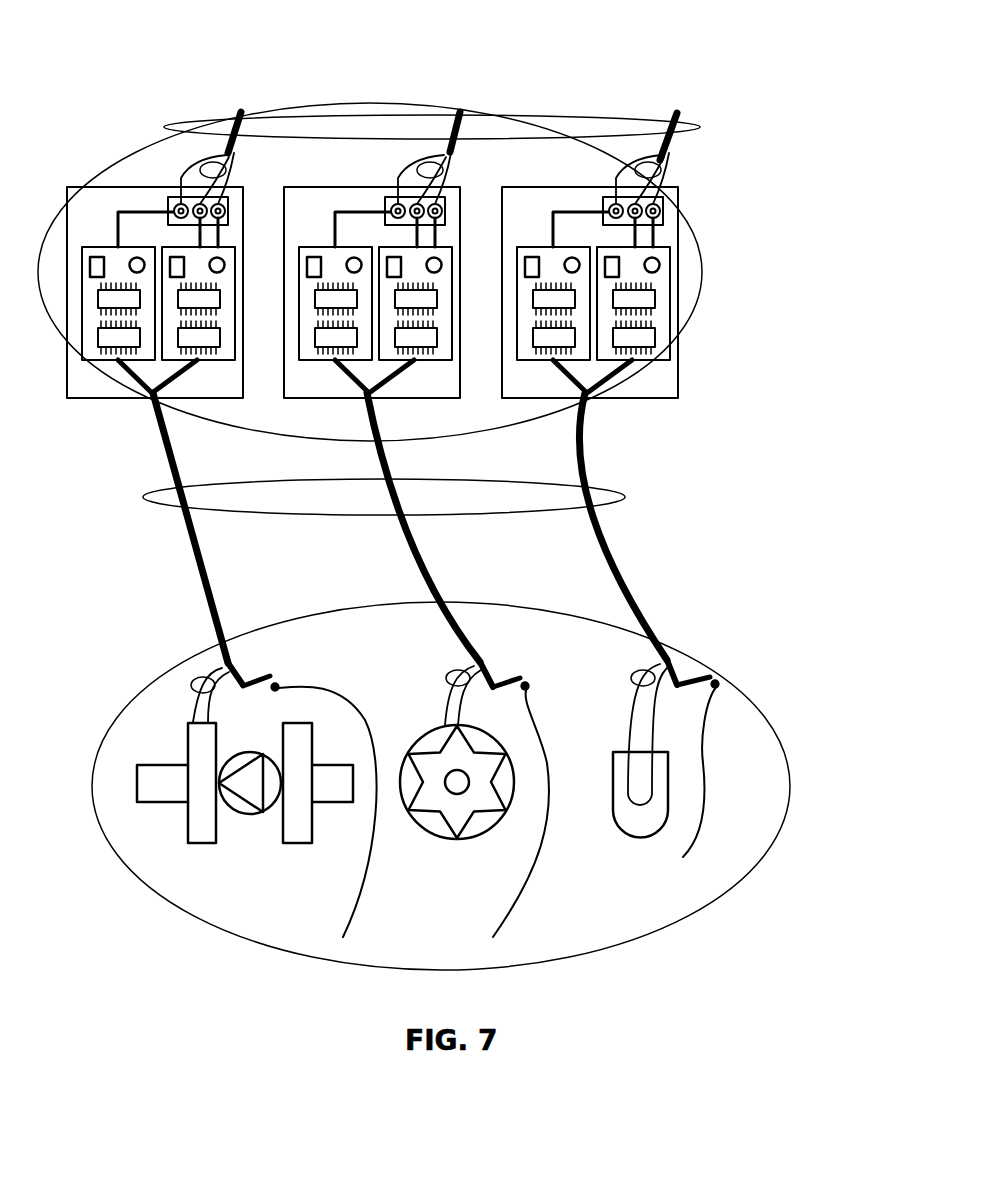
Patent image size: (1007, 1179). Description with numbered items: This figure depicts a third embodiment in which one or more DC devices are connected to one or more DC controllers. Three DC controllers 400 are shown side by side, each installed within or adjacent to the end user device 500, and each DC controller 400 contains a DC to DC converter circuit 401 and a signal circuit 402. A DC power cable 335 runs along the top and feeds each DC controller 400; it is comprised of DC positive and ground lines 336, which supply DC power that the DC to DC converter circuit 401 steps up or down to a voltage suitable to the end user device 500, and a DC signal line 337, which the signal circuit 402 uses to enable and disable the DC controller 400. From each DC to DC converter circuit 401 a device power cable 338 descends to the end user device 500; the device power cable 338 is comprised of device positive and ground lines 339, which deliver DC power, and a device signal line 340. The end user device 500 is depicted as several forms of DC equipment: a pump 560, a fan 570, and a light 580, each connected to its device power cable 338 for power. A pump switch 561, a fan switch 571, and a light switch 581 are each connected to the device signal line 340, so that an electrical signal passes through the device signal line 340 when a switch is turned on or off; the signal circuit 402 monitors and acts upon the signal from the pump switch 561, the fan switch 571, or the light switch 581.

The DC power cable 335 is at (262, 118).
The DC positive and ground lines 336 is at (665, 168).
The DC signal line 337 is at (185, 168).
The device power cable 338 is at (700, 462).
The device positive and ground lines 339 is at (632, 683).
The device signal line 340 is at (683, 857).
The DC controller 400 is at (700, 287).
The DC to DC converter circuit 401 is at (668, 362).
The signal circuit 402 is at (575, 378).
The end user device 500 is at (120, 865).
The pump 560 is at (245, 800).
The pump switch 561 is at (373, 640).
The fan 570 is at (457, 801).
The fan switch 571 is at (597, 648).
The light 580 is at (629, 812).
The light switch 581 is at (790, 640).